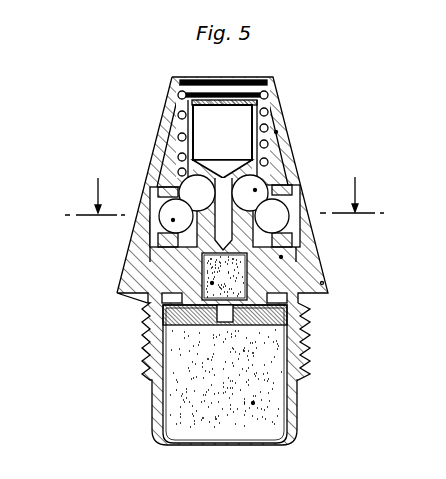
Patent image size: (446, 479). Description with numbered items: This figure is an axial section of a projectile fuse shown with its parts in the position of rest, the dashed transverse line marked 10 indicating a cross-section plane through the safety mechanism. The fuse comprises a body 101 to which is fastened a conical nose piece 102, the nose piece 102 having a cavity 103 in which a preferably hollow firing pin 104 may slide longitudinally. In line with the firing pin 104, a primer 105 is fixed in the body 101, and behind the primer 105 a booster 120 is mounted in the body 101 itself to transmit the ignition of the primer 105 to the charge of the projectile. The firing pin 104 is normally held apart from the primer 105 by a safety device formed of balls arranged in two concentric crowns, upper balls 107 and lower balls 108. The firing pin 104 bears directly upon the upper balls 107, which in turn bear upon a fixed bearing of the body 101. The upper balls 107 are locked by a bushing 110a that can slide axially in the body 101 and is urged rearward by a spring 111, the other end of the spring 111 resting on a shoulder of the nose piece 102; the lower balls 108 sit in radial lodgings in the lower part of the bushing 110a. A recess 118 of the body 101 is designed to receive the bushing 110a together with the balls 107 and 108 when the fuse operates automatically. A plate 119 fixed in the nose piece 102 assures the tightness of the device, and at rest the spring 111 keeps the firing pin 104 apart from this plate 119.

The body 101 is at (324, 283).
The nose piece 102 is at (186, 350).
The cavity 103 is at (277, 132).
The firing pin 104 is at (165, 133).
The primer 105 is at (212, 283).
The balls of the upper crown 107 is at (256, 190).
The balls of the lower crown 108 is at (173, 220).
The bushing 110a is at (168, 178).
The spring 111 is at (273, 102).
The recess 118 is at (282, 257).
The plate 119 is at (248, 78).
The booster 120 is at (254, 403).
The section line 10 is at (224, 196).